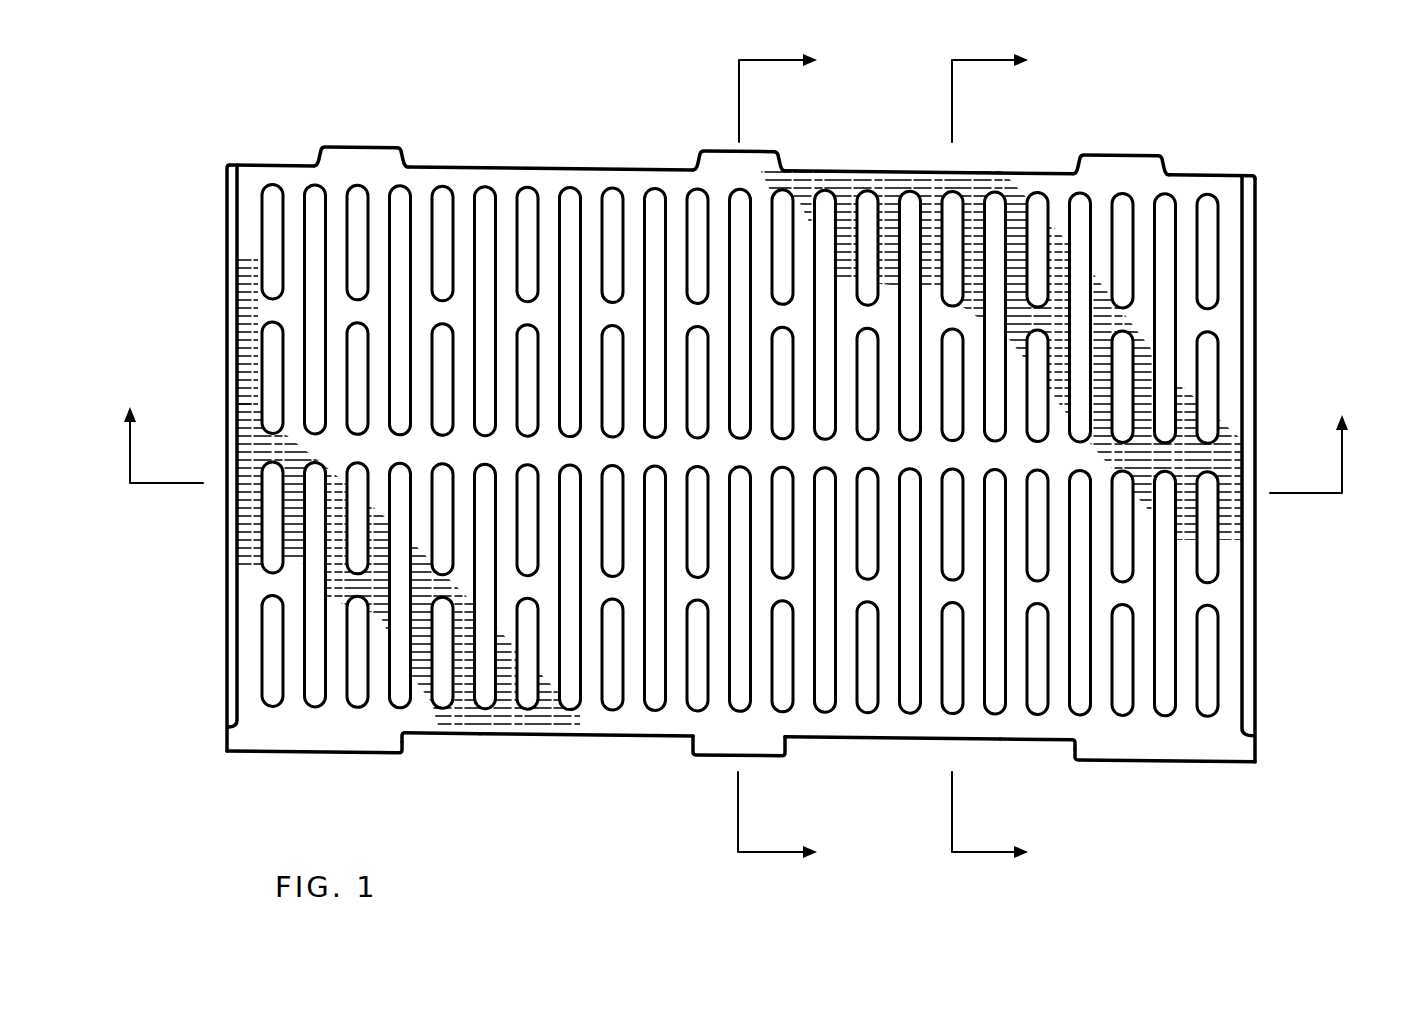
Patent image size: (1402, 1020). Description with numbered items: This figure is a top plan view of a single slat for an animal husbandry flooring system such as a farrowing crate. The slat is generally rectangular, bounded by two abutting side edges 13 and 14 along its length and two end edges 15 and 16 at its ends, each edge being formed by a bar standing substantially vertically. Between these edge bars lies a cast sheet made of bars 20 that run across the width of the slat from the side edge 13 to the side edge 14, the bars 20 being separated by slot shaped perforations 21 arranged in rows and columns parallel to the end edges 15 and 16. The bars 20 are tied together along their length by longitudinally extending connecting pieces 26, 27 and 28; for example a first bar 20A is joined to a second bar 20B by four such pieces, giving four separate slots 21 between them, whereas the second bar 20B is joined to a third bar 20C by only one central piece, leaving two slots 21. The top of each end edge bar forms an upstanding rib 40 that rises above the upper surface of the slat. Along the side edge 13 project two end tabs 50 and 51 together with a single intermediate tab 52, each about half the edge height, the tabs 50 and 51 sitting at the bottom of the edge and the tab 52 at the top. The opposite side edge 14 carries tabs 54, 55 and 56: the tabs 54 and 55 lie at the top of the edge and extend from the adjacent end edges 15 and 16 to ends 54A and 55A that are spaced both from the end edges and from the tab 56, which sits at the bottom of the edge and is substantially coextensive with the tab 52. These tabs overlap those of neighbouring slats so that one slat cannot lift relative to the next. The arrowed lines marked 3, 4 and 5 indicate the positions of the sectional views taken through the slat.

The side edge 13 is at (545, 167).
The side edge 14 is at (580, 738).
The end edge 15 is at (222, 498).
The end edge 16 is at (1255, 388).
The bar 20 is at (295, 633).
The first bar 20A is at (252, 203).
The second bar 20B is at (293, 208).
The third bar 20C is at (335, 203).
The slot shaped perforation 21 is at (272, 657).
The connecting piece 26 is at (272, 583).
The connecting piece 27 is at (268, 450).
The connecting piece 28 is at (272, 308).
The upstanding rib 40 is at (230, 228).
The end tab 50 is at (367, 147).
The end tab 51 is at (1130, 155).
The intermediate tab 52 is at (715, 153).
The tab 54 is at (330, 755).
The end of tab 54A is at (403, 745).
The tab 55 is at (1195, 763).
The end of tab 55A is at (1068, 750).
The tab 56 is at (720, 747).
The section line 3- 3 is at (735, 448).
The section line 4- 4 is at (990, 459).
The section line 5- 5 is at (777, 459).